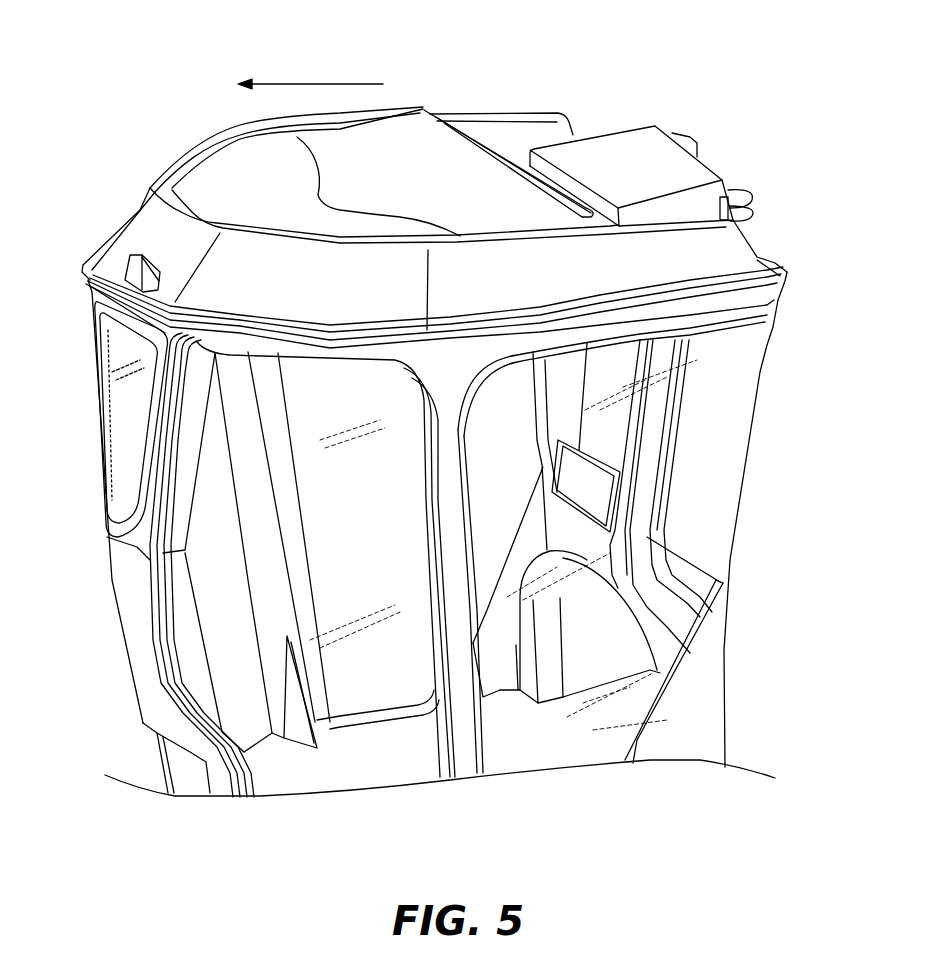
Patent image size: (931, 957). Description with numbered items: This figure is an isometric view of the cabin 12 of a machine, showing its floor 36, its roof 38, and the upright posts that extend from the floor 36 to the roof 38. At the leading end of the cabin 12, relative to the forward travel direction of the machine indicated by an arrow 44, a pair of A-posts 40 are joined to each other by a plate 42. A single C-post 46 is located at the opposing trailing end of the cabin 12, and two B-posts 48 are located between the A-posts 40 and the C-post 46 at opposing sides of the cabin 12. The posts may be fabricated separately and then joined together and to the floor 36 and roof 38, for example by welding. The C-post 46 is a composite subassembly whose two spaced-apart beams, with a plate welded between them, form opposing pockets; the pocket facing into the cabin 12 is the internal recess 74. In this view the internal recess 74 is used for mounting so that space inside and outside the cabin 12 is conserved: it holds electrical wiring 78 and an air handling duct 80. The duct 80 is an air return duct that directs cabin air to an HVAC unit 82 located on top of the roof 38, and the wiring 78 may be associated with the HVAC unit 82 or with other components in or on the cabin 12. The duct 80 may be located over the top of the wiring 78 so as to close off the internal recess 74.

The cabin 12 is at (137, 91).
The floor 36 is at (307, 777).
The roof 38 is at (110, 262).
The A-posts 40 is at (187, 462).
The plate 42 is at (147, 663).
The arrow 44 is at (323, 83).
The C-post 46 is at (660, 575).
The B-posts 48 is at (287, 493).
The internal recess 74 is at (597, 540).
The electrical wiring 78 is at (617, 537).
The air handling duct 80 is at (613, 430).
The HVAC unit 82 is at (623, 147).